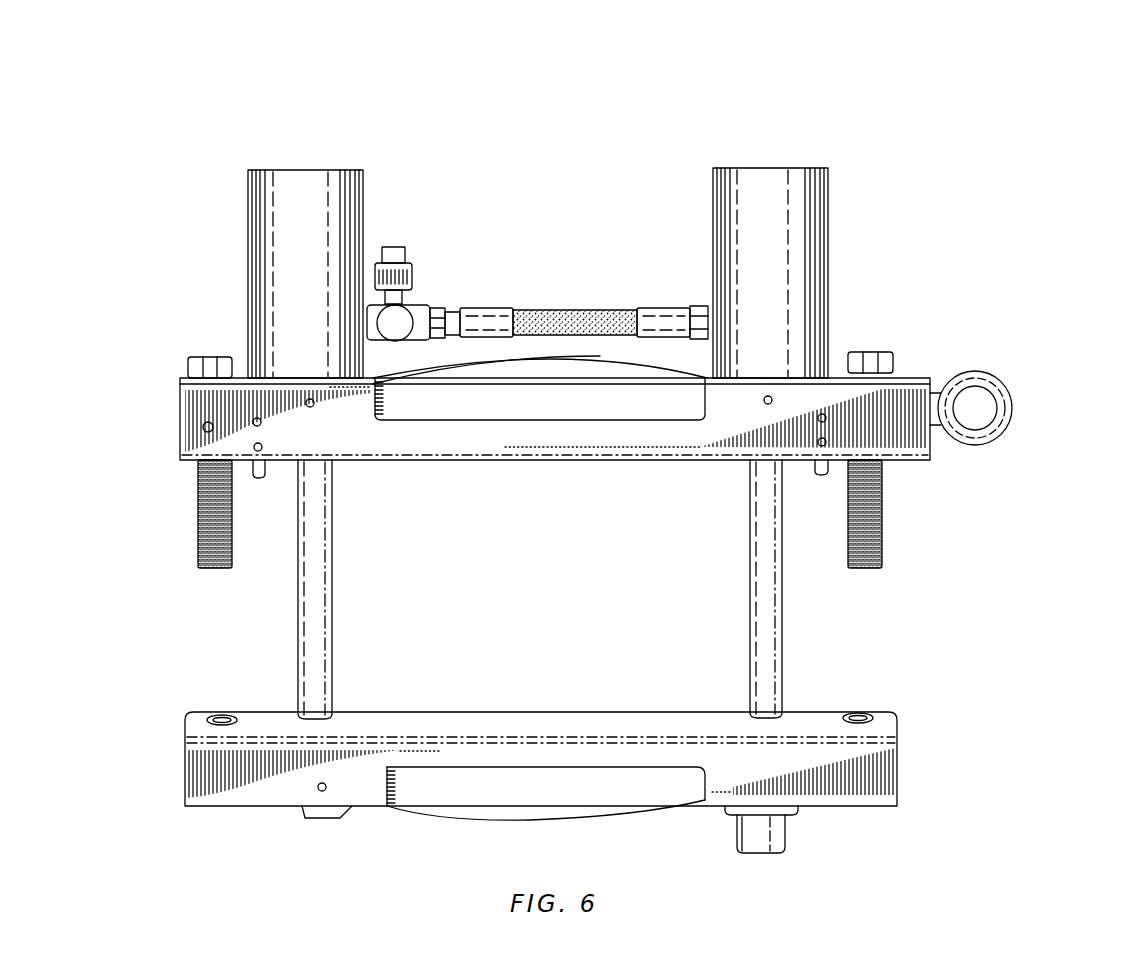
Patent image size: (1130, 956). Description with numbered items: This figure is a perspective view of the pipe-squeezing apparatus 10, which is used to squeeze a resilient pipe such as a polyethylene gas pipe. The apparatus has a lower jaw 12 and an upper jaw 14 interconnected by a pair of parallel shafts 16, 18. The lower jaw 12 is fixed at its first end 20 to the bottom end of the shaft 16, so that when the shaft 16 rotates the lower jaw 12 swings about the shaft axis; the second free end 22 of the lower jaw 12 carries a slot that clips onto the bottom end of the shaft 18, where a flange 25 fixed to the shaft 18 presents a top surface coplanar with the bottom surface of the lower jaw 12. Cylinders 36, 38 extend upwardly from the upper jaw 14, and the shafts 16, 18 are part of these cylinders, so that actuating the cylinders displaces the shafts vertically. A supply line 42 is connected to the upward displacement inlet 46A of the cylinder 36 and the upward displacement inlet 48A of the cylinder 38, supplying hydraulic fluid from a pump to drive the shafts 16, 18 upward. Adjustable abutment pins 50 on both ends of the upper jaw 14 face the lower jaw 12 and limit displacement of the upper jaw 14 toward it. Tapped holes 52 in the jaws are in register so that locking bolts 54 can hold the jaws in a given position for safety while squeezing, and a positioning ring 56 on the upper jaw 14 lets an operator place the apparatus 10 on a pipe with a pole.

The pipe-squeezing apparatus 10 is at (952, 182).
The lower jaw 12 is at (596, 788).
The upper jaw 14 is at (900, 390).
The shaft 16 is at (325, 620).
The shaft 18 is at (760, 618).
The first end 20 is at (260, 790).
The second end 22 is at (845, 778).
The flange 25 is at (727, 817).
The cylinder 36 is at (267, 250).
The cylinder 38 is at (800, 195).
The supply line 42 is at (570, 315).
The upward displacement inlet 46A is at (362, 300).
The upward displacement inlet 48A is at (708, 312).
The adjustable abutment pins 50 is at (262, 480).
The tapped holes 52 is at (223, 718).
The locking bolts 54 is at (190, 365).
The positioning ring 56 is at (1011, 395).